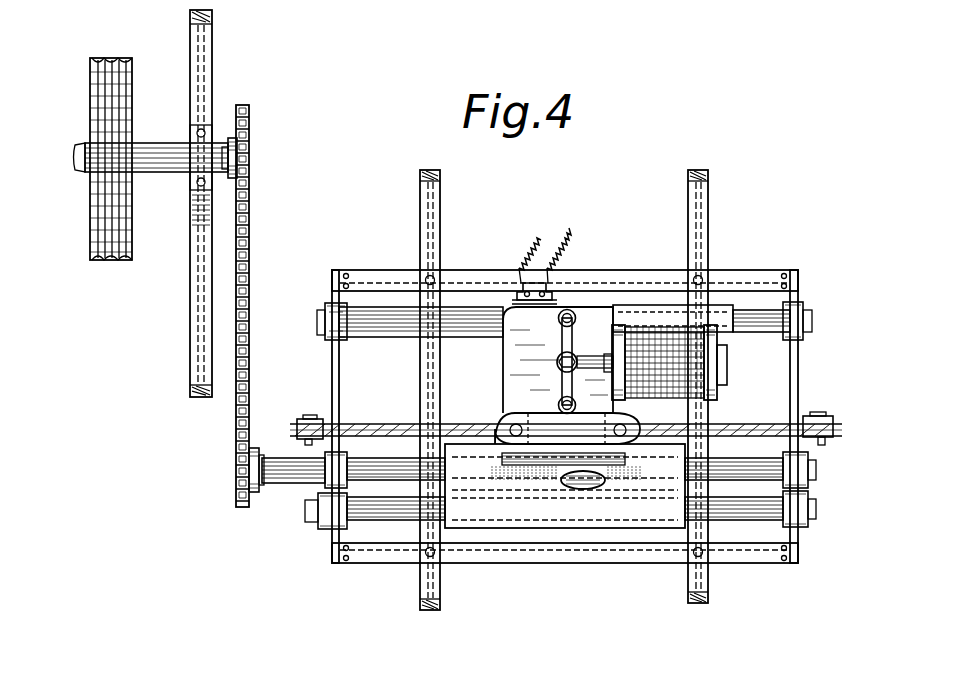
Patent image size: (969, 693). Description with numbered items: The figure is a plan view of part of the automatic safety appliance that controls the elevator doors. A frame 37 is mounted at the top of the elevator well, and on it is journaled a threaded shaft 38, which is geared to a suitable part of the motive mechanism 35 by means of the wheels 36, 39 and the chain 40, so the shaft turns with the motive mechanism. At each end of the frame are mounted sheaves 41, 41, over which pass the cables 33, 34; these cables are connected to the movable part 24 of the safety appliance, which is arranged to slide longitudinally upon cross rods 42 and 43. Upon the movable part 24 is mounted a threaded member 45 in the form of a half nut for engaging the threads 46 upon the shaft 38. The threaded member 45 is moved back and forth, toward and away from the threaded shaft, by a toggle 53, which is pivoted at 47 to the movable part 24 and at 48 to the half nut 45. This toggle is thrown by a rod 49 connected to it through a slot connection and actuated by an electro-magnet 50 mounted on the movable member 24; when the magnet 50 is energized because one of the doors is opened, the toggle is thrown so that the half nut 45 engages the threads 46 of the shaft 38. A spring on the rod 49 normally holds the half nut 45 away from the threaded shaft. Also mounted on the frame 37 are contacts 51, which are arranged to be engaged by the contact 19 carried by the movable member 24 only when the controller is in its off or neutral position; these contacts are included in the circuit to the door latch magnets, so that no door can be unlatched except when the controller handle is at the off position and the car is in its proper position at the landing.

The contact 19 is at (514, 292).
The movable part 24 is at (596, 431).
The cable 33 is at (768, 425).
The cable 34 is at (377, 424).
The motive mechanism 35 is at (128, 102).
The wheel 36 is at (254, 450).
The frame 37 is at (527, 553).
The threaded shaft 38 is at (303, 483).
The wheel 39 is at (250, 162).
The chain 40 is at (249, 271).
The sheave 41 is at (309, 419).
The cross rod 42 is at (757, 316).
The cross rod 43 is at (755, 522).
The threaded member 45 is at (535, 413).
The threads 46 is at (585, 489).
The pivot 47 is at (570, 345).
The pivot 48 is at (573, 400).
The rod 49 is at (595, 362).
The electro-magnet 50 is at (667, 355).
The contacts 51 is at (537, 291).
The toggle 53 is at (580, 372).